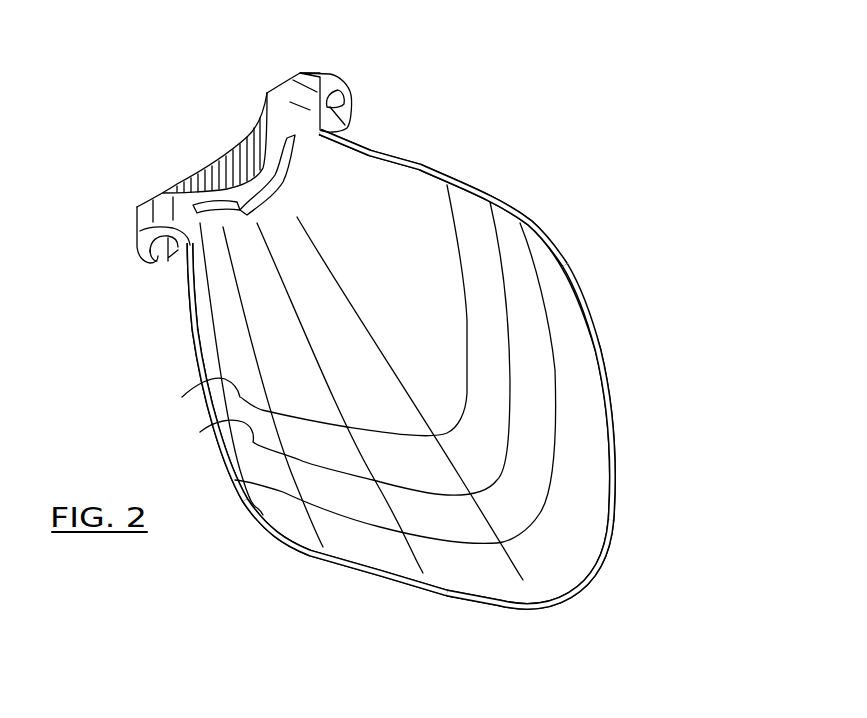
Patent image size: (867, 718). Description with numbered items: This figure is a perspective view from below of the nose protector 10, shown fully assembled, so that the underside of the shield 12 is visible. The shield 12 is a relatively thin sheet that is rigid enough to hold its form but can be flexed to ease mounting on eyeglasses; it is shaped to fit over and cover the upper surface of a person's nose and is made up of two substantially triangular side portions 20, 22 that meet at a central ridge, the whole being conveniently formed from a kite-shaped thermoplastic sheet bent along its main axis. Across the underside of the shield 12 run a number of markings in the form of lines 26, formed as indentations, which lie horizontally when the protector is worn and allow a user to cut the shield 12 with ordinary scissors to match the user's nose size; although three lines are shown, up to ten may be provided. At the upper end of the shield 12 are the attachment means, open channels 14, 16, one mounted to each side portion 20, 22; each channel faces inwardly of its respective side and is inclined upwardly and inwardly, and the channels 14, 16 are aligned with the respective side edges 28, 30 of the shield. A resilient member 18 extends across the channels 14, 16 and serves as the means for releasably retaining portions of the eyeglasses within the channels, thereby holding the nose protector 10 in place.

The nose protector 10 is at (637, 288).
The shield 12 is at (573, 572).
The open channel 14 is at (137, 228).
The open channel 16 is at (333, 75).
The resilient member 18 is at (220, 157).
The side portion 20 is at (283, 520).
The side portion 22 is at (587, 390).
The lines 26 is at (210, 420).
The side edge 28 is at (187, 315).
The side edge 30 is at (497, 200).